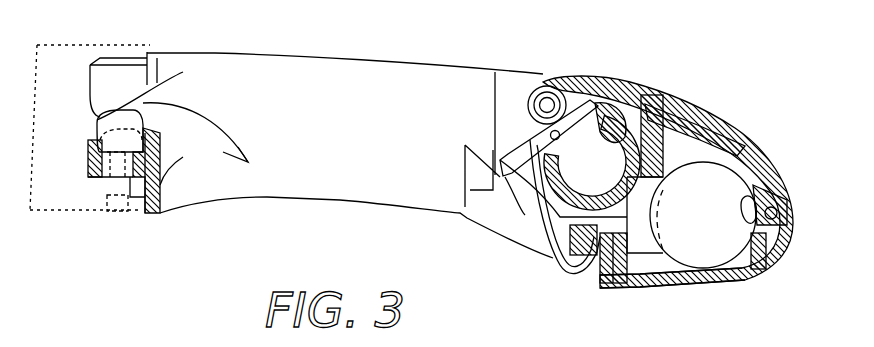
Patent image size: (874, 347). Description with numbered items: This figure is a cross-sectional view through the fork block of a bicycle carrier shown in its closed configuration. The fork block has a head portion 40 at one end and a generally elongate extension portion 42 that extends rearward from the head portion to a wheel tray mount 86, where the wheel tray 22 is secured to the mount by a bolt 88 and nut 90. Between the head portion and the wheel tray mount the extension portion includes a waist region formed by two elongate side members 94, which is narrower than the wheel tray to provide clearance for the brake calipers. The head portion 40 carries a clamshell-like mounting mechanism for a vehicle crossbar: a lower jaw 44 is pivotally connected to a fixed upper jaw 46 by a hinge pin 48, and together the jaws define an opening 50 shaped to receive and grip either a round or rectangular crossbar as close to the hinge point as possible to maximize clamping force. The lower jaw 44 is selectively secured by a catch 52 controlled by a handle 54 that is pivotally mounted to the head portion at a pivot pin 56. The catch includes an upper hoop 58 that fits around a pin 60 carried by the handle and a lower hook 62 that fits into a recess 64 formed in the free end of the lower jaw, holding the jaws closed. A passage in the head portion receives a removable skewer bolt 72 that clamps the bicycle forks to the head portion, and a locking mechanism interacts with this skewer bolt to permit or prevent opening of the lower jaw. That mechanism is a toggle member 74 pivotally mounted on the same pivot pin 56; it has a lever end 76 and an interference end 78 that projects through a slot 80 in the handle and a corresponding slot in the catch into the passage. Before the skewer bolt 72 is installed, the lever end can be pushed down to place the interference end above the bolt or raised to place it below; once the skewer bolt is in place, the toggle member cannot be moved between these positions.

The wheel tray 22 is at (62, 45).
The wheel tray mount 86 is at (128, 68).
The extension portion 42 is at (327, 48).
The elongate side members 94 is at (368, 147).
The toggle member 74 is at (535, 120).
The pin 60 is at (545, 87).
The upper hoop 58 is at (552, 80).
The skewer bolt 72 is at (595, 95).
The handle 54 is at (672, 93).
The head portion 40 is at (746, 127).
The upper jaw 46 is at (765, 160).
The opening 50 is at (765, 198).
The hinge pin 48 is at (783, 240).
The lower jaw 44 is at (747, 282).
The pivot pin 56 is at (545, 135).
The interference end 78 is at (603, 174).
The lever end 76 is at (532, 157).
The slot 80 is at (527, 168).
The catch 52 is at (555, 268).
The lower hook 62 is at (580, 282).
The recess 64 is at (607, 250).
The bolt 88 is at (113, 184).
The nut 90 is at (118, 213).